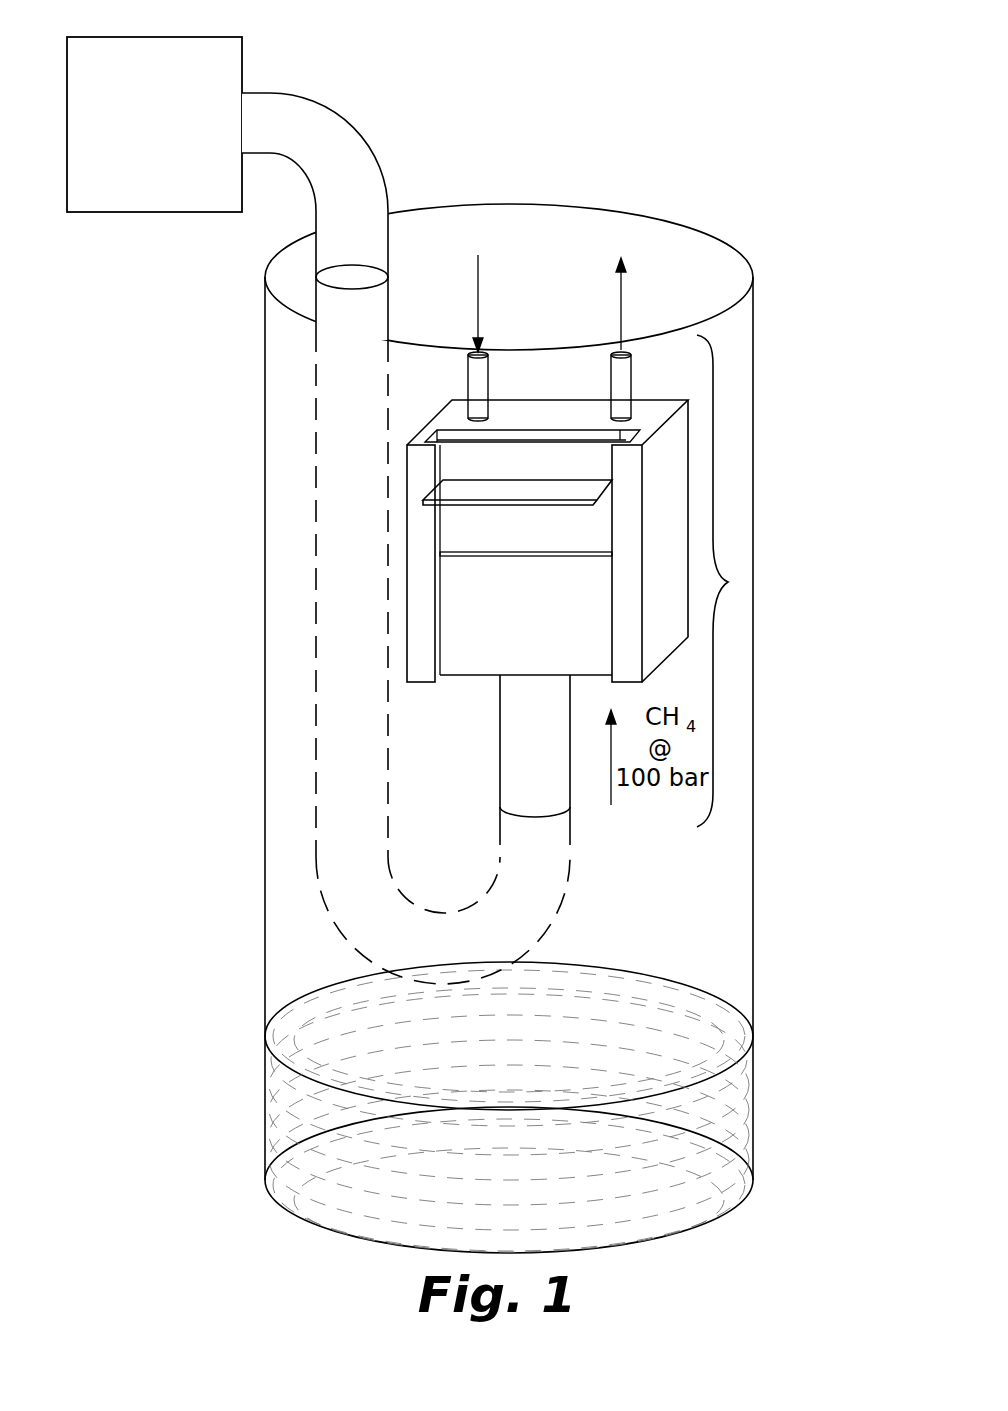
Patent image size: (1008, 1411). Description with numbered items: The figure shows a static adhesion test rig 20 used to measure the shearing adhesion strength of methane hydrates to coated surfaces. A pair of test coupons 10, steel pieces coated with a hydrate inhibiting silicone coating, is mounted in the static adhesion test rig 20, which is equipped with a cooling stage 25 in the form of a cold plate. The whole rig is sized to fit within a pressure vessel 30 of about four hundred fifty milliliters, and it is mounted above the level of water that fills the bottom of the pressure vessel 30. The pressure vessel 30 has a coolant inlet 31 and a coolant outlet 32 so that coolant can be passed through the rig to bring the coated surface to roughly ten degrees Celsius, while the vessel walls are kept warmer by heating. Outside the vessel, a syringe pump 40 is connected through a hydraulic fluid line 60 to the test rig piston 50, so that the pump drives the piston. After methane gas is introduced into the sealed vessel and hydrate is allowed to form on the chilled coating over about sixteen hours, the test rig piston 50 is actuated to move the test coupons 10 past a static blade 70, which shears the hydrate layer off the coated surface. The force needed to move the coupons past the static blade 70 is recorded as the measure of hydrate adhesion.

The test coupons 10 is at (453, 598).
The static adhesion test rig 20 is at (728, 582).
The cooling stage 25 is at (663, 520).
The pressure vessel 30 is at (753, 847).
The coolant inlet 31 is at (481, 388).
The coolant outlet 32 is at (625, 372).
The syringe pump 40 is at (242, 37).
The test rig piston 50 is at (513, 737).
The hydraulic fluid line 60 is at (353, 145).
The static blade 70 is at (593, 500).